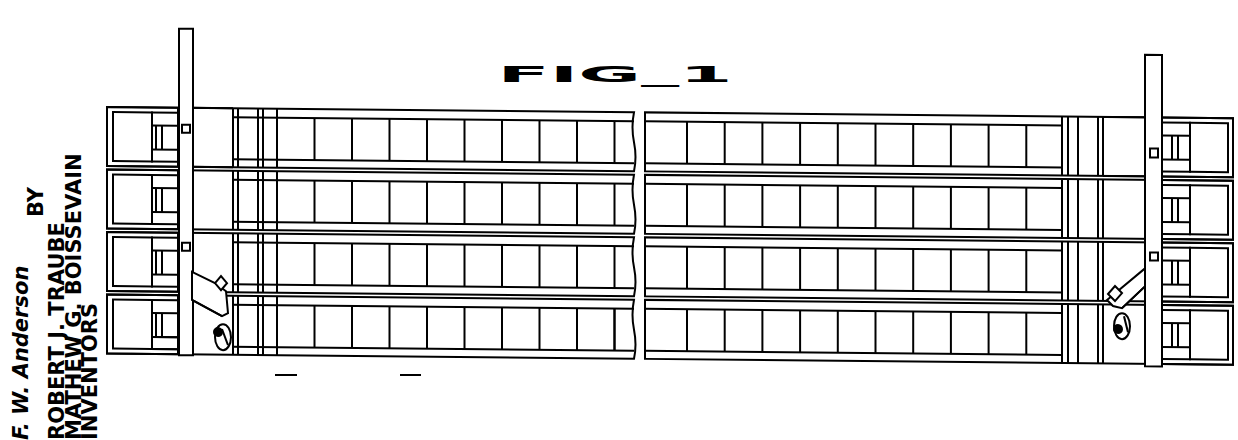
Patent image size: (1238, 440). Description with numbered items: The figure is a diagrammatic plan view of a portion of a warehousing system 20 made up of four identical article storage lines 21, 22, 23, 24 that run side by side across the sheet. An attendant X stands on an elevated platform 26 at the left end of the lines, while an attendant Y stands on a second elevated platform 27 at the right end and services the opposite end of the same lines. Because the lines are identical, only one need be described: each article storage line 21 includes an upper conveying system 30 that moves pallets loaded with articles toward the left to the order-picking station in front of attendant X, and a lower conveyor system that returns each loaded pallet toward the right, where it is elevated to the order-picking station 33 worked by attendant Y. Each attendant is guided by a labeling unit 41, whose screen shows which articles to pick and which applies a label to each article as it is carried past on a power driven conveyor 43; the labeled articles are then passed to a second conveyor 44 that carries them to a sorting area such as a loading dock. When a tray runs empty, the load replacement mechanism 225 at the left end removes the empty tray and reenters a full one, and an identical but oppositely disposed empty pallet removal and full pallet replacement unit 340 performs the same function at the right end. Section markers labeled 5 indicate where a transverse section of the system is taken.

The warehousing system 20 is at (122, 76).
The article storage line 21 is at (126, 362).
The article storage line 22 is at (100, 251).
The article storage line 23 is at (100, 188).
The article storage line 24 is at (106, 128).
The load replacement mechanism 225 is at (143, 362).
The elevated platform 26 is at (214, 109).
The elevated platform 27 is at (1131, 117).
The upper conveying system 30 is at (611, 342).
The order-picking station 33 is at (1103, 341).
The empty pallet removal and full pallet replacement unit 340 is at (1206, 370).
The labeling unit 41 is at (215, 272).
The power driven conveyor 43 is at (203, 303).
The second conveyor 44 is at (193, 50).
The section line 5- 5 is at (280, 380).
The attendant X is at (213, 346).
The attendant Y is at (1121, 343).